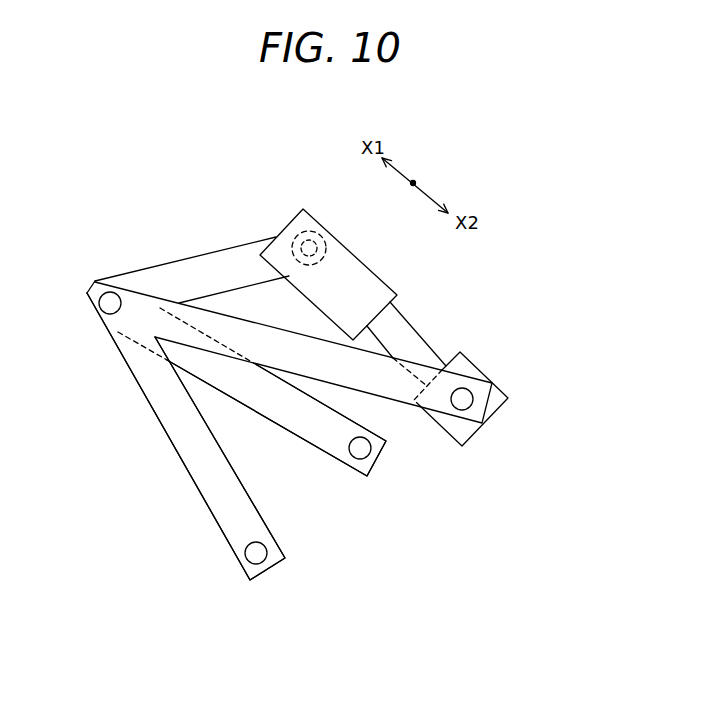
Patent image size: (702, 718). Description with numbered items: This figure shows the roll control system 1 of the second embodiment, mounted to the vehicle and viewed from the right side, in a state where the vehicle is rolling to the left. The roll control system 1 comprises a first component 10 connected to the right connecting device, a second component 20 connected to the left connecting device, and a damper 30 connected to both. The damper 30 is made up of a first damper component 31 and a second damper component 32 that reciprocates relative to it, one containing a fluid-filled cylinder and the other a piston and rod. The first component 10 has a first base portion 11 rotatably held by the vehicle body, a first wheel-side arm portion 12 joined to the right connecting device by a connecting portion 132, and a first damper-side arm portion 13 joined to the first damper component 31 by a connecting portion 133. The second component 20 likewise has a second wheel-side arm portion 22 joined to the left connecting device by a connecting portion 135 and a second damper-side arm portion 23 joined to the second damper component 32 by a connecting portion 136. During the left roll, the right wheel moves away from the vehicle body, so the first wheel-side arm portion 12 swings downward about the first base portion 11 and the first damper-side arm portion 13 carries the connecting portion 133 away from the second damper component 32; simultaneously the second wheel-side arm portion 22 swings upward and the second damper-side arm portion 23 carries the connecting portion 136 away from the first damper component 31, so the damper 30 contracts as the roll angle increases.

The roll control system 1 is at (177, 175).
The first component 10 is at (207, 506).
The first base portion 11 is at (88, 293).
The first wheel-side arm portion 12 is at (183, 445).
The first damper-side arm portion 13 is at (397, 385).
The second component 20 is at (315, 453).
The second wheel-side arm portion 22 is at (262, 398).
The second damper-side arm portion 23 is at (205, 265).
The damper 30 is at (421, 323).
The first damper component 31 is at (510, 399).
The second damper component 32 is at (350, 250).
The connecting portion 132 is at (260, 555).
The connecting portion 133 is at (470, 402).
The connecting portion 135 is at (363, 448).
The connecting portion 136 is at (313, 228).